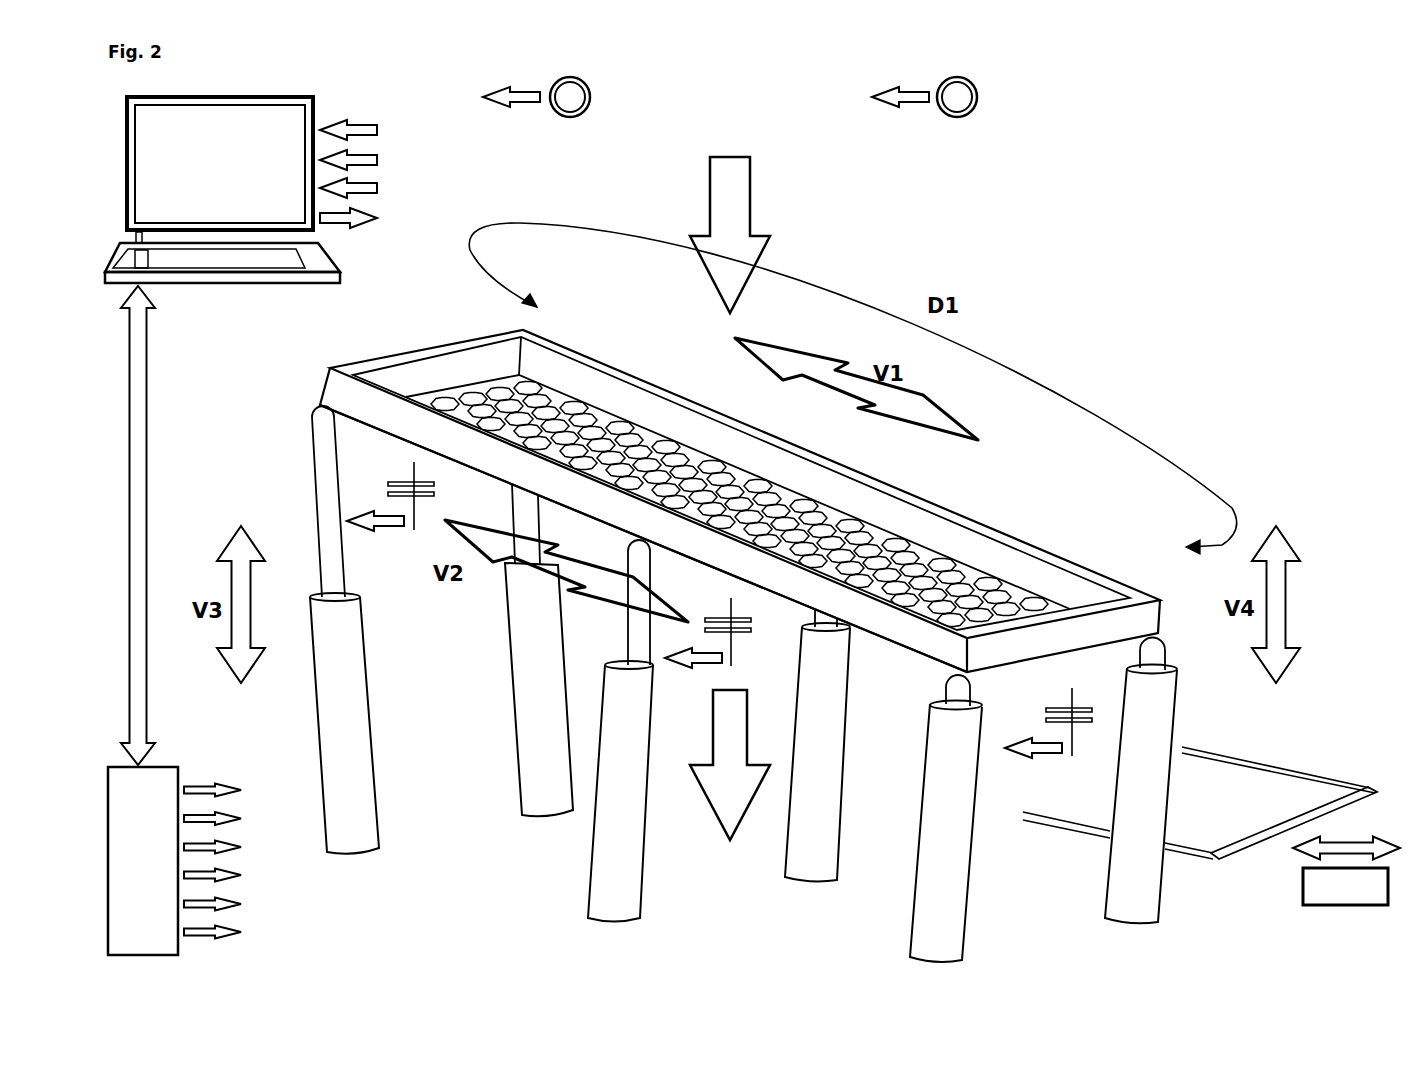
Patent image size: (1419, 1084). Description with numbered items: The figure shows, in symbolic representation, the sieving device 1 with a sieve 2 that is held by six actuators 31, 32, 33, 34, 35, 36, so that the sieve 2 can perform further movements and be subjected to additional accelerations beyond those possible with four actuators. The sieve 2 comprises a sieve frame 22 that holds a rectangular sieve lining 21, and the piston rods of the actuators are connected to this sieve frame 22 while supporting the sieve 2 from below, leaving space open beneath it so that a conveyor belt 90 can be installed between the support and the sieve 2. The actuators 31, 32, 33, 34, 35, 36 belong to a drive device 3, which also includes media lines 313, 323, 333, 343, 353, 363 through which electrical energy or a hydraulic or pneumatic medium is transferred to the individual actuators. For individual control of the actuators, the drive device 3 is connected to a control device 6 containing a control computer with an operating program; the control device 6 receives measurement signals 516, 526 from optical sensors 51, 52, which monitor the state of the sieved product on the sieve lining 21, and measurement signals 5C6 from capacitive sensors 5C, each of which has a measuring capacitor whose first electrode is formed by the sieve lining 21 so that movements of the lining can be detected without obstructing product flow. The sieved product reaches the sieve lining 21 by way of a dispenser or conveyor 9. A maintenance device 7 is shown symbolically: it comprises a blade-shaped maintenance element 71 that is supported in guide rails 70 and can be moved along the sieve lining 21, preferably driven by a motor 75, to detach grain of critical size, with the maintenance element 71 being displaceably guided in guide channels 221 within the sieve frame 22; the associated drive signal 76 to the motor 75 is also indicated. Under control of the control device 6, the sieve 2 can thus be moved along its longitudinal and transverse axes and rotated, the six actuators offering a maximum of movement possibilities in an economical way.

The sieving device 1 is at (1142, 200).
The sieve 2 is at (637, 358).
The sieve lining 21 is at (978, 602).
The sieve frame 22 is at (975, 528).
The guide channels 221 is at (898, 652).
The drive device 3 is at (143, 861).
The actuator 31 is at (927, 888).
The actuator 32 is at (605, 865).
The actuator 33 is at (358, 795).
The actuator 34 is at (535, 663).
The actuator 35 is at (795, 848).
The actuator 36 is at (1153, 725).
The media line 313 is at (233, 790).
The media line 323 is at (233, 818).
The media line 333 is at (233, 847).
The media line 343 is at (233, 875).
The media line 353 is at (233, 904).
The media line 363 is at (233, 932).
The optical sensor 51 is at (592, 82).
The optical sensor 52 is at (979, 82).
The measurement signal 516 is at (430, 115).
The measurement signal 526 is at (624, 130).
The capacitive sensor 5C is at (740, 608).
The measurement signal 5C6 is at (691, 483).
The control device 6 is at (222, 190).
The maintenance device 7 is at (860, 583).
The guide rails 70 is at (1062, 860).
The maintenance element 71 is at (1245, 843).
The motor 75 is at (1345, 886).
The drive signal 76 is at (860, 534).
The dispenser or conveyor 9 is at (730, 235).
The conveyor belt 90 is at (730, 765).